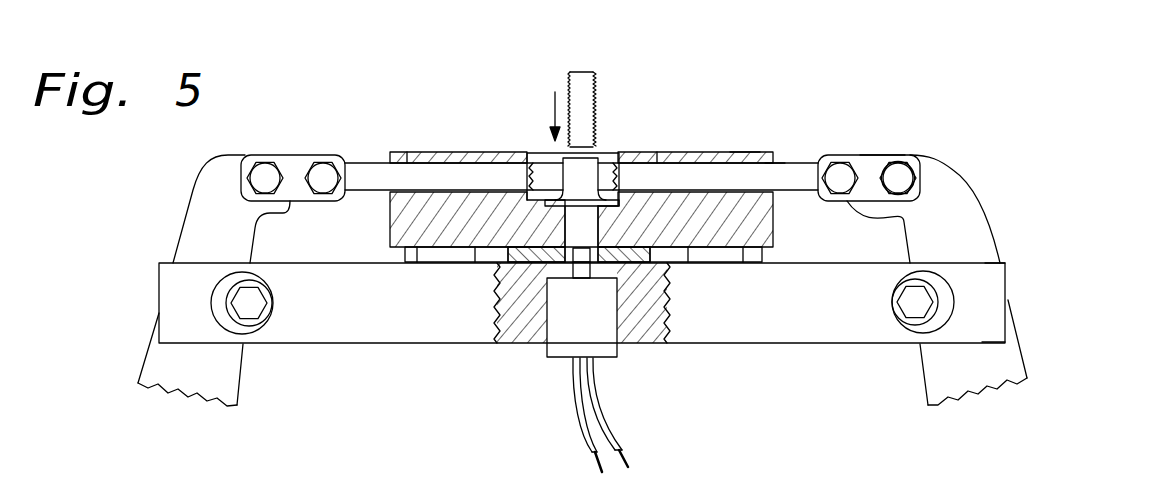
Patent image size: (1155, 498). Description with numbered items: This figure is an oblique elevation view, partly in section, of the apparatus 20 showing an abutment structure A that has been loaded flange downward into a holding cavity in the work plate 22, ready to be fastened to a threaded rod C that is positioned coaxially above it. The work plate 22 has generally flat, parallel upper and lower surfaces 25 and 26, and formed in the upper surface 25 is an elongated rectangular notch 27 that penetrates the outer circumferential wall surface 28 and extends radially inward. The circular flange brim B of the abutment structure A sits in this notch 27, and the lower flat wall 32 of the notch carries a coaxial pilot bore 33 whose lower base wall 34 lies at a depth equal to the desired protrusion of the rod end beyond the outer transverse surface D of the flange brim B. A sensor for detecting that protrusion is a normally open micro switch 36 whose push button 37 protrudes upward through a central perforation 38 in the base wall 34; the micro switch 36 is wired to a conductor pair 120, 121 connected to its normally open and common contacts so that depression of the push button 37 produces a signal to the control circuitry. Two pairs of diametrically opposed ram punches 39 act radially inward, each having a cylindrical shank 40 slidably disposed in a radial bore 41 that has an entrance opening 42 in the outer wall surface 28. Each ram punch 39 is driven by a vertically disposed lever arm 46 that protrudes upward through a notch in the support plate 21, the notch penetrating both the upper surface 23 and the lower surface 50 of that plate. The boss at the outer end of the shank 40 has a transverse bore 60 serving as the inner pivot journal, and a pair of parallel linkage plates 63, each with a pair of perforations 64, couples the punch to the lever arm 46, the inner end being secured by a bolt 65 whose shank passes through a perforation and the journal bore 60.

The apparatus 20 is at (1037, 124).
The support plate 21 is at (843, 330).
The work plate 22 is at (740, 140).
The upper surface 23 is at (998, 262).
The upper surface 25 is at (697, 153).
The lower surface 26 is at (407, 263).
The notch 27 is at (541, 137).
The outer circumferential wall surface 28 is at (773, 157).
The lower flat wall 32 is at (537, 200).
The pilot bore 33 is at (615, 250).
The lower base wall 34 is at (523, 227).
The micro switch 36 is at (553, 360).
The push button 37 is at (608, 282).
The perforation 38 is at (593, 265).
The ram punch 39 is at (385, 163).
The shank 40 is at (388, 186).
The radial bore 41 is at (404, 152).
The entrance opening 42 is at (600, 247).
The lever arm 46 is at (184, 215).
The lower surface 50 is at (982, 342).
The bore 60 is at (845, 158).
The linkage plates 63 is at (873, 168).
The perforations 64 is at (923, 178).
The bolt 65 is at (265, 173).
The conductor 120 is at (585, 450).
The conductor 121 is at (613, 437).
The abutment structure A is at (600, 163).
The flange brim B is at (620, 195).
The threaded rod C is at (594, 93).
The outer transverse surface D is at (590, 232).